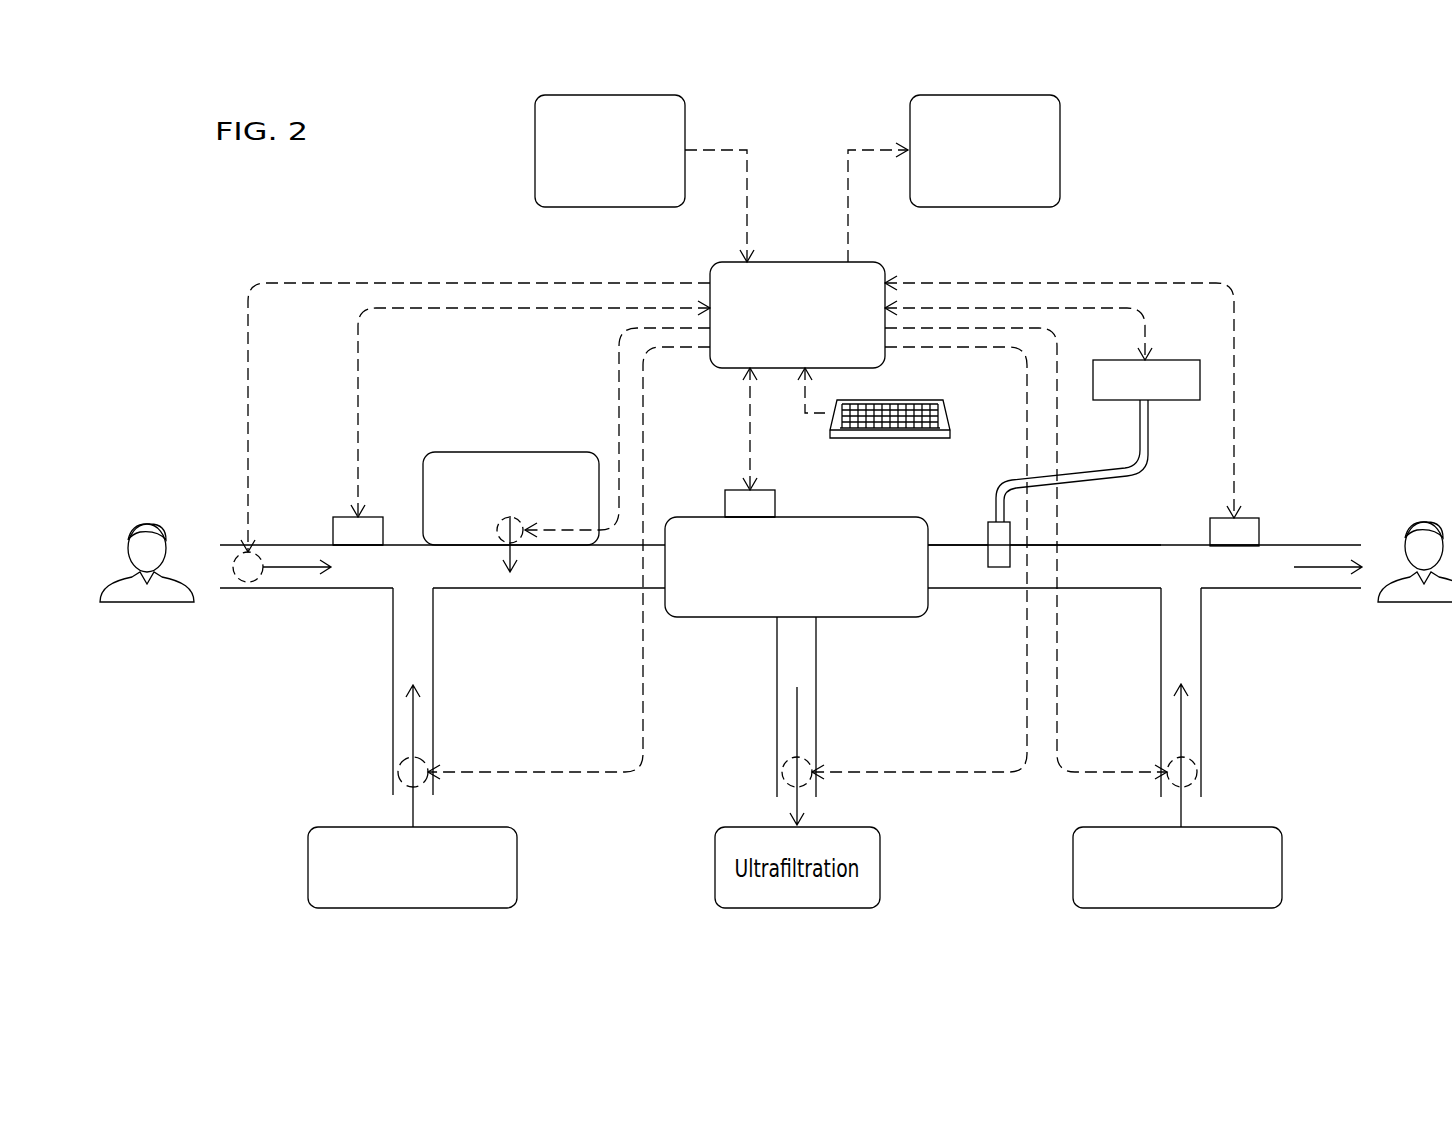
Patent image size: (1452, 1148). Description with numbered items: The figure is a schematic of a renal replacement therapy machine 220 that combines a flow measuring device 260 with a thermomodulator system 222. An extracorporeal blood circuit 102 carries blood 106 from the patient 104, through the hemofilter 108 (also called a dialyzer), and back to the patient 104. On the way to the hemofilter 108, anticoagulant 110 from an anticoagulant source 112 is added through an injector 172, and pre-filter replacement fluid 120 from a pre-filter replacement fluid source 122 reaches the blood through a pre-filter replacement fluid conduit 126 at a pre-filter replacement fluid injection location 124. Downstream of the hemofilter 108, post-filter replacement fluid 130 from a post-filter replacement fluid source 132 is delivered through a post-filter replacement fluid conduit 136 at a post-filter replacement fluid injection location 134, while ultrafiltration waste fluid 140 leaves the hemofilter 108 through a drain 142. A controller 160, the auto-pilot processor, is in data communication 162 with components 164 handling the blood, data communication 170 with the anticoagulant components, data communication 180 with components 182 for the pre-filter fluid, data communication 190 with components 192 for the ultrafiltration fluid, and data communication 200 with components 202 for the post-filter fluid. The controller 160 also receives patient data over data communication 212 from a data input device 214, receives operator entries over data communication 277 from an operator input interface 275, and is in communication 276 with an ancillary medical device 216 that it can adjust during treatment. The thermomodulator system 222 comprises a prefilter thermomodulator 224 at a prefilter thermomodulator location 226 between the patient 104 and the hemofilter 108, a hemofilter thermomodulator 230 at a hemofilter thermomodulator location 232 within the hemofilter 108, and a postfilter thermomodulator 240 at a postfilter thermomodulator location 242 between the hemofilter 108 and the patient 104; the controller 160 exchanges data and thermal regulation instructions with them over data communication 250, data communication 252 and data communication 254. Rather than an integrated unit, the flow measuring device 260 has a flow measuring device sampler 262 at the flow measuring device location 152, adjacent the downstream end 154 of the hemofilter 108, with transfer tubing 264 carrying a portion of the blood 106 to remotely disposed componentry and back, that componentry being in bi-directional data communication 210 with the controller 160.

The extracorporeal blood circuit 102 is at (606, 575).
The patient 104 is at (162, 603).
The blood 106 is at (290, 568).
The hemofilter 108 is at (858, 620).
The anticoagulant 110 is at (513, 550).
The anticoagulant source 112 is at (512, 452).
The pre-filter replacement fluid 120 is at (412, 720).
The pre-filter replacement fluid source 122 is at (518, 867).
The pre-filter replacement fluid injection location 124 is at (390, 593).
The pre-filter replacement fluid conduit 126 is at (433, 682).
The post-filter replacement fluid 130 is at (1183, 724).
The post-filter replacement fluid source 132 is at (1283, 868).
The post-filter replacement fluid injection location 134 is at (1154, 597).
The post-filter replacement fluid conduit 136 is at (1161, 675).
The ultrafiltration waste fluid 140 is at (795, 720).
The drain 142 is at (818, 720).
The flow measuring device location 152 is at (1017, 550).
The downstream end 154 is at (928, 543).
The controller 160 is at (713, 263).
The data communication 162 is at (477, 282).
The components 164 is at (233, 565).
The data communication 170 is at (618, 397).
The injector 172 is at (497, 530).
The data communication 180 is at (643, 470).
The components 182 is at (403, 763).
The data communication 190 is at (920, 348).
The components 192 is at (787, 763).
The data communication 200 is at (1060, 440).
The components 202 is at (1189, 765).
The data communication 210 is at (1063, 310).
The data communication 212 is at (748, 180).
The data input device 214 is at (535, 150).
The ancillary medical device 216 is at (1060, 150).
The renal replacement therapy machine 220 is at (1185, 181).
The thermomodulator system 222 is at (947, 258).
The prefilter thermomodulator 224 is at (355, 515).
The prefilter thermomodulator location 226 is at (330, 543).
The hemofilter thermomodulator 230 is at (775, 507).
The hemofilter thermomodulator location 232 is at (725, 515).
The postfilter thermomodulator 240 is at (1221, 516).
The postfilter thermomodulator location 242 is at (1264, 544).
The data communication 250 is at (358, 378).
The data communication 252 is at (750, 408).
The data communication 254 is at (1070, 283).
The flow measuring device 260 is at (1160, 358).
The flow measuring device sampler 262 is at (1000, 567).
The transfer tubing 264 is at (1086, 475).
The operator input interface 275 is at (948, 420).
The communication 276 is at (873, 148).
The data communication 277 is at (808, 397).